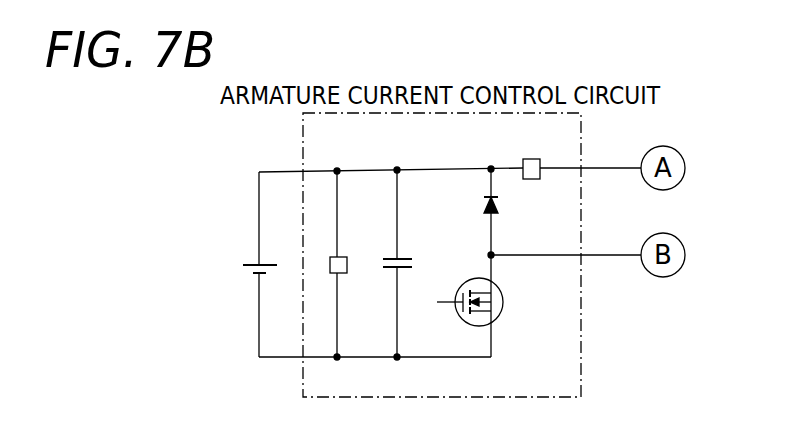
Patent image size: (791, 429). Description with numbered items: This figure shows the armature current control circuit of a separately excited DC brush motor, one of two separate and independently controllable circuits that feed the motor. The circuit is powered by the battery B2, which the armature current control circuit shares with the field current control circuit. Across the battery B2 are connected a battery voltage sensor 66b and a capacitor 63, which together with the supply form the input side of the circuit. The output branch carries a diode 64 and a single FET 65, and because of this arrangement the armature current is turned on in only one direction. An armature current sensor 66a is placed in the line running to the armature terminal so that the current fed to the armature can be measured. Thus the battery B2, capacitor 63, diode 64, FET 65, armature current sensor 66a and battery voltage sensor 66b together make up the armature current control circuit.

The battery B2 is at (250, 263).
The capacitor 63 is at (394, 255).
The diode 64 is at (498, 215).
The FET 65 is at (485, 277).
The armature current sensor 66a is at (535, 158).
The battery voltage sensor 66b is at (347, 268).